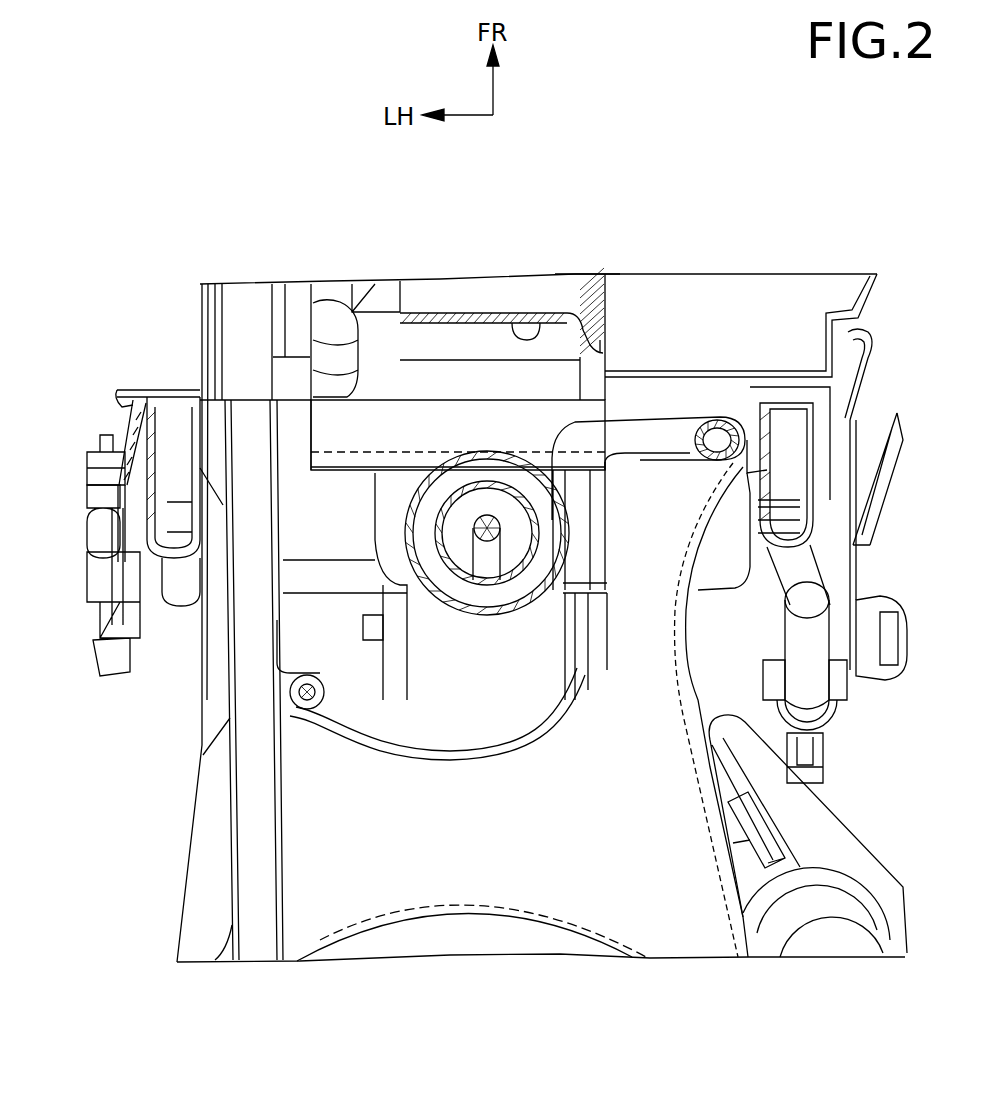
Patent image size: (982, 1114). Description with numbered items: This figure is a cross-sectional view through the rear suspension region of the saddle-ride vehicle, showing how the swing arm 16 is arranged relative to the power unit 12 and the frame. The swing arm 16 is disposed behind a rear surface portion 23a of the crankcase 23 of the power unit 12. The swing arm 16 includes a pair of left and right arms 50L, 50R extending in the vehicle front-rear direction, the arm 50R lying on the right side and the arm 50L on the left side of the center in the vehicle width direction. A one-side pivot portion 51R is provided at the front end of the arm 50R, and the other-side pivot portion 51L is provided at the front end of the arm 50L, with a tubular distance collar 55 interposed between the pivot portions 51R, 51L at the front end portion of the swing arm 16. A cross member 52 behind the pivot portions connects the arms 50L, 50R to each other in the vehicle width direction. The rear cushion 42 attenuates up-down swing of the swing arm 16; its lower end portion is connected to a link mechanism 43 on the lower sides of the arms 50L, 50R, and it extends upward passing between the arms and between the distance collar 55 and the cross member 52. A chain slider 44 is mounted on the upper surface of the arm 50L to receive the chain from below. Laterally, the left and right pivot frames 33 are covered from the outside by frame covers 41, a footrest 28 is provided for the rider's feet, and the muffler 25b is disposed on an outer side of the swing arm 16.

The power unit 12 is at (589, 272).
The swing arm 16 is at (730, 857).
The crankcase 23 is at (602, 276).
The rear surface portion 23a is at (537, 312).
The muffler 25b is at (833, 947).
The footrest 28 is at (893, 598).
The pivot frame 33 is at (107, 466).
The frame cover 41 is at (93, 501).
The rear cushion 42 is at (487, 614).
The link mechanism 43 is at (291, 692).
The chain slider 44 is at (245, 763).
The arm 50L is at (287, 623).
The arm 50R is at (677, 539).
The other-side pivot portion 51L is at (292, 395).
The one-side pivot portion 51R is at (716, 412).
The cross member 52 is at (417, 873).
The distance collar 55 is at (413, 398).